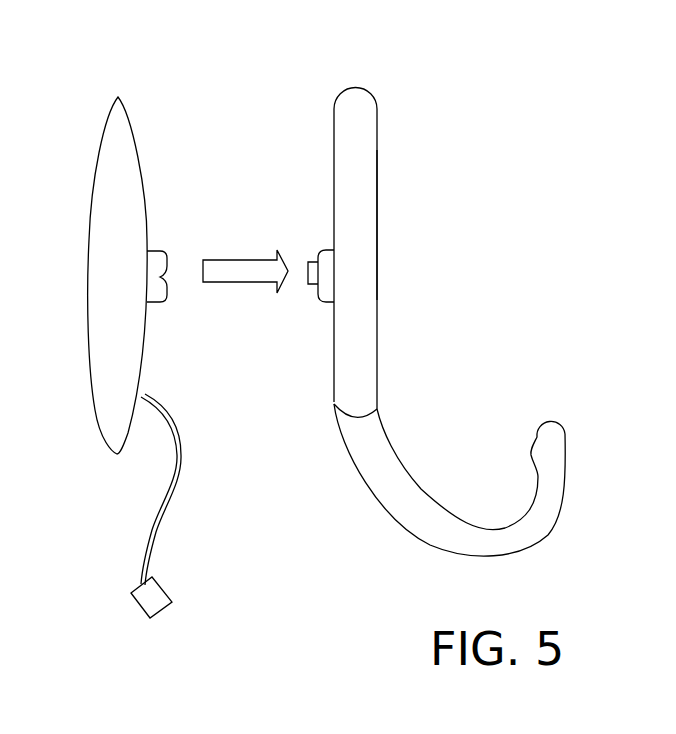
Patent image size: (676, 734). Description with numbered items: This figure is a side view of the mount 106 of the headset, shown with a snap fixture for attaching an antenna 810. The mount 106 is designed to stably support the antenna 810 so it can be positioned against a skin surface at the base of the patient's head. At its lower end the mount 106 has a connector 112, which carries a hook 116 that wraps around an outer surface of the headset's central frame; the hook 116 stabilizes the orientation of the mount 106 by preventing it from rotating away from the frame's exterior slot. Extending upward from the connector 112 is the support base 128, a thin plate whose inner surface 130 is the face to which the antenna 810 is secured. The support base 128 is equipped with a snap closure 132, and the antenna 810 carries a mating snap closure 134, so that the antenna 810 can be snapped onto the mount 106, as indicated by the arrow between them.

The mount 106 is at (421, 307).
The inner surface 130 is at (332, 132).
The support base 128 is at (374, 192).
The snap closure 132 is at (301, 294).
The connector 112 is at (376, 485).
The hook 116 is at (566, 477).
The antenna 810 is at (131, 337).
The mating snap closure 134 is at (182, 298).